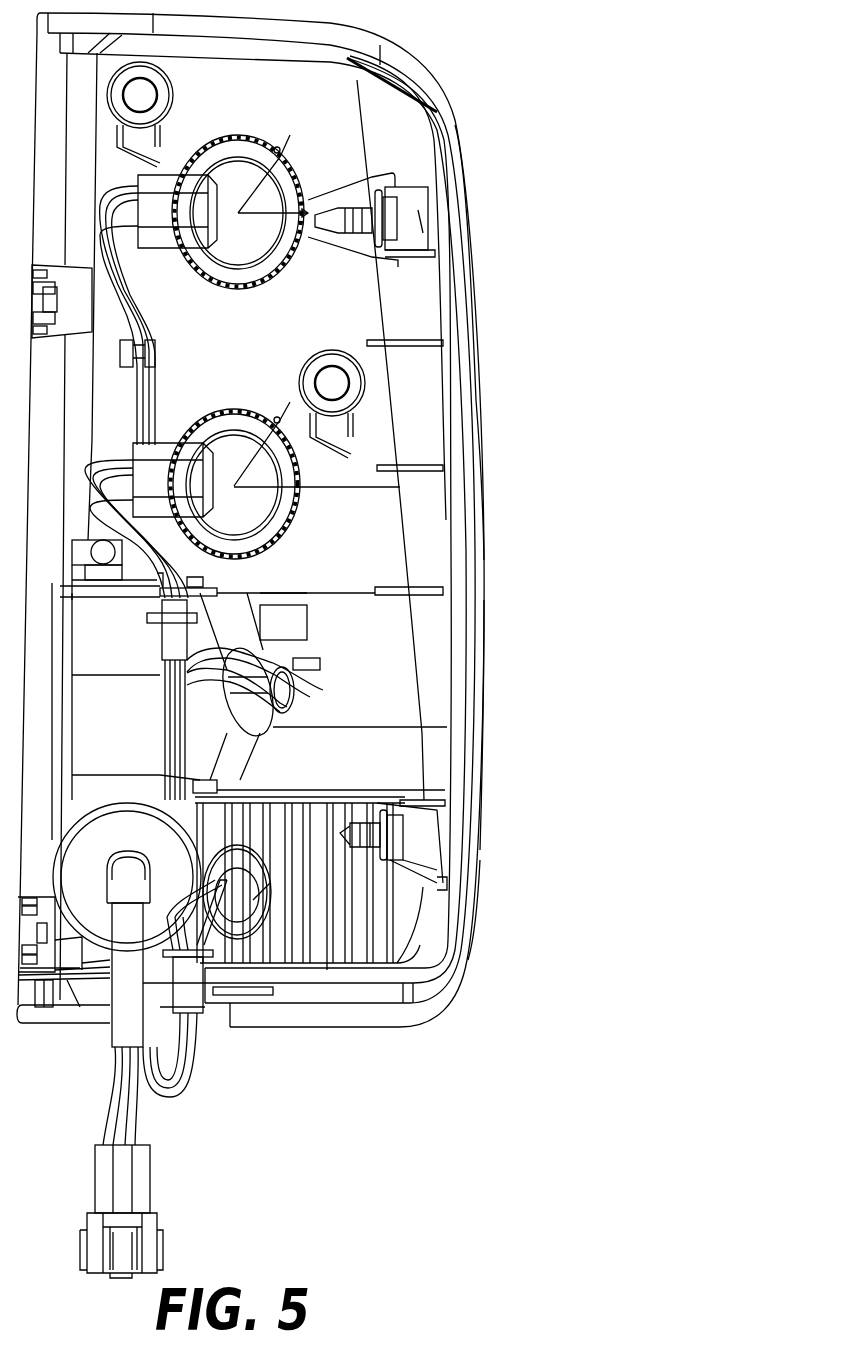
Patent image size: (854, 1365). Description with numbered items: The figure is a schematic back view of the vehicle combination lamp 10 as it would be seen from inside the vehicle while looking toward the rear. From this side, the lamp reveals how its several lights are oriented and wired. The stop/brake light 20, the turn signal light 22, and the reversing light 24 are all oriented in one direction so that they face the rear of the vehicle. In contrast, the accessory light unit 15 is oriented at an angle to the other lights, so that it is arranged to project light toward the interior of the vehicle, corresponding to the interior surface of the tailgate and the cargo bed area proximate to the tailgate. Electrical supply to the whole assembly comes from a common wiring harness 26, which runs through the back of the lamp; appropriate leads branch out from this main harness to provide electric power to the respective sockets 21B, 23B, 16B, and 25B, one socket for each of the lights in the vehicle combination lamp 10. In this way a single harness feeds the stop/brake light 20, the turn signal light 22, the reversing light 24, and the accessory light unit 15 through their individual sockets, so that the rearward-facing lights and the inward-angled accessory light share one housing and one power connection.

The vehicle combination lamp 10 is at (397, 1037).
The accessory light unit 15 is at (490, 703).
The stop/brake light 20 is at (477, 215).
The turn signal light 22 is at (492, 430).
The reversing light 24 is at (480, 847).
The socket 21B is at (283, 160).
The socket 23B is at (283, 522).
The socket 16B is at (293, 693).
The socket 25B is at (272, 840).
The common wiring harness 26 is at (140, 1118).